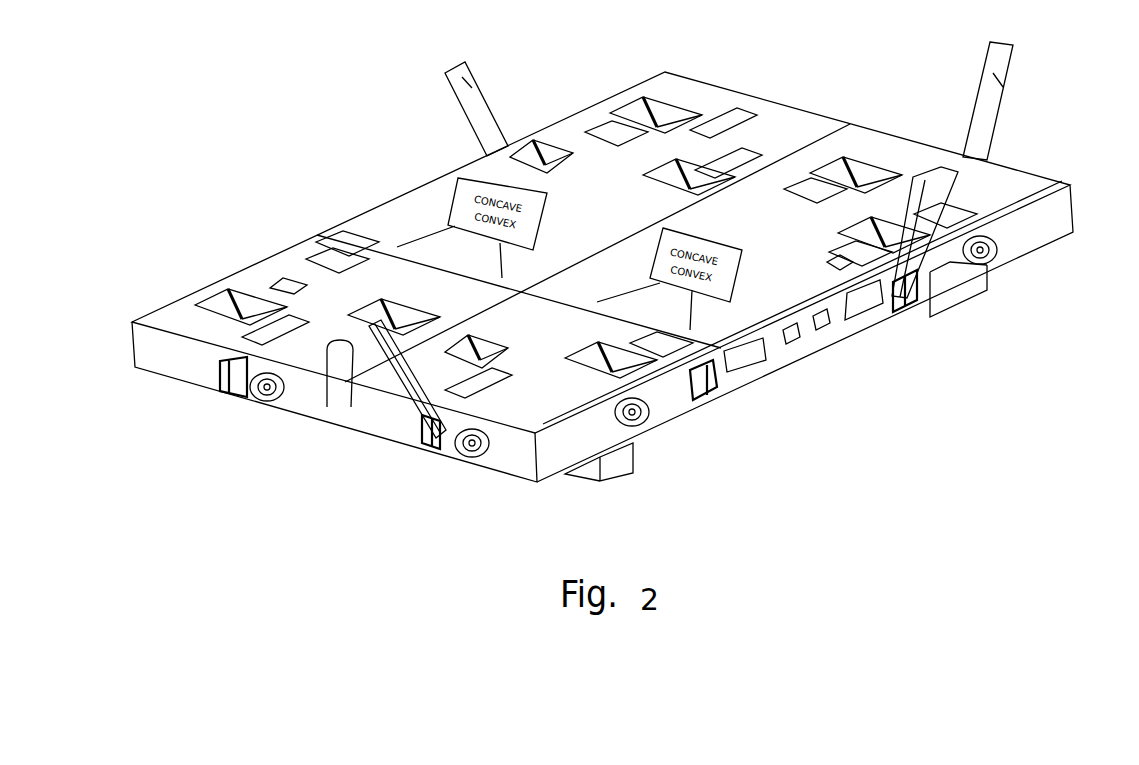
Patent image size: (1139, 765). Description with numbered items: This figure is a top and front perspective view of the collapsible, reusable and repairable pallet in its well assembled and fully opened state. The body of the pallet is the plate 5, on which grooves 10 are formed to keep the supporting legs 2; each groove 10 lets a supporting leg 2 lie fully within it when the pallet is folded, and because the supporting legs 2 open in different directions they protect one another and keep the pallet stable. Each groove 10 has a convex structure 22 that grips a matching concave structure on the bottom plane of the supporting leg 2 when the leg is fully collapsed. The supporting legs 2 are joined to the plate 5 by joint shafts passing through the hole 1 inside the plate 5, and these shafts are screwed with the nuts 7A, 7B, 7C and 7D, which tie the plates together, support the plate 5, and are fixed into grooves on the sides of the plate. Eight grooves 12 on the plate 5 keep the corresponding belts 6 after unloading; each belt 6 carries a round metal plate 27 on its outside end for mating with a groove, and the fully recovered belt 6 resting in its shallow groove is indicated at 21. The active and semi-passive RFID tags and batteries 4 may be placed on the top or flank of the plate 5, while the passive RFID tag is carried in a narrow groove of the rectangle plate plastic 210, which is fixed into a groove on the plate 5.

The hole 1 is at (930, 308).
The supporting leg 2 is at (968, 294).
The active RFID tag, semi-passive RFID tag and batteries 4 is at (810, 333).
The plate 5 is at (790, 148).
The belt 6 is at (470, 72).
The nut 7A is at (650, 406).
The nut 7B is at (998, 256).
The nut 7C is at (270, 401).
The nut 7D is at (468, 462).
The groove 10 is at (210, 282).
The groove 12 is at (548, 140).
The fully recovered belt 21 is at (722, 390).
The convex structure 22 is at (712, 100).
The round metal plate 27 is at (940, 198).
The rectangle plate plastic 210 is at (357, 240).